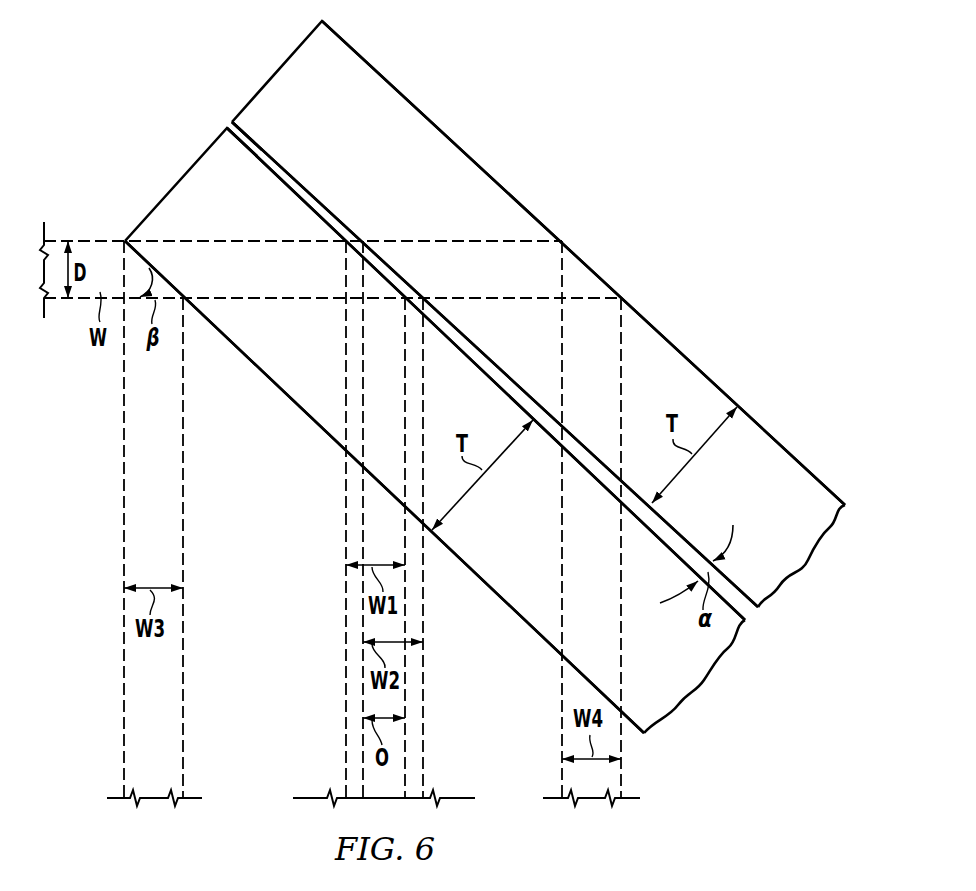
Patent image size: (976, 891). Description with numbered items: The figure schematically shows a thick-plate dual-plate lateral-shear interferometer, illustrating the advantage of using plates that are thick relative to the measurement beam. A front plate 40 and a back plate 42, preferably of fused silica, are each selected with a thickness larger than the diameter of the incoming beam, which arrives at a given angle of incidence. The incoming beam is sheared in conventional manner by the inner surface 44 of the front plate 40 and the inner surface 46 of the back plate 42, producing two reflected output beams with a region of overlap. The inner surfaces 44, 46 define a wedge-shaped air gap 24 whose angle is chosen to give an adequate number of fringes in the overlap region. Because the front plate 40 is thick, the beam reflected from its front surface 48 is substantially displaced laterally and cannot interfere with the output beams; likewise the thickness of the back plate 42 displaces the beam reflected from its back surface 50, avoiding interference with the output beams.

The air gap 24 is at (220, 136).
The front plate 40 is at (160, 194).
The back plate 42 is at (437, 118).
The inner surface of the front plate 44 is at (268, 168).
The inner surface of the back plate 46 is at (309, 189).
The front surface of the front plate 48 is at (298, 406).
The back surface of the back plate 50 is at (495, 180).